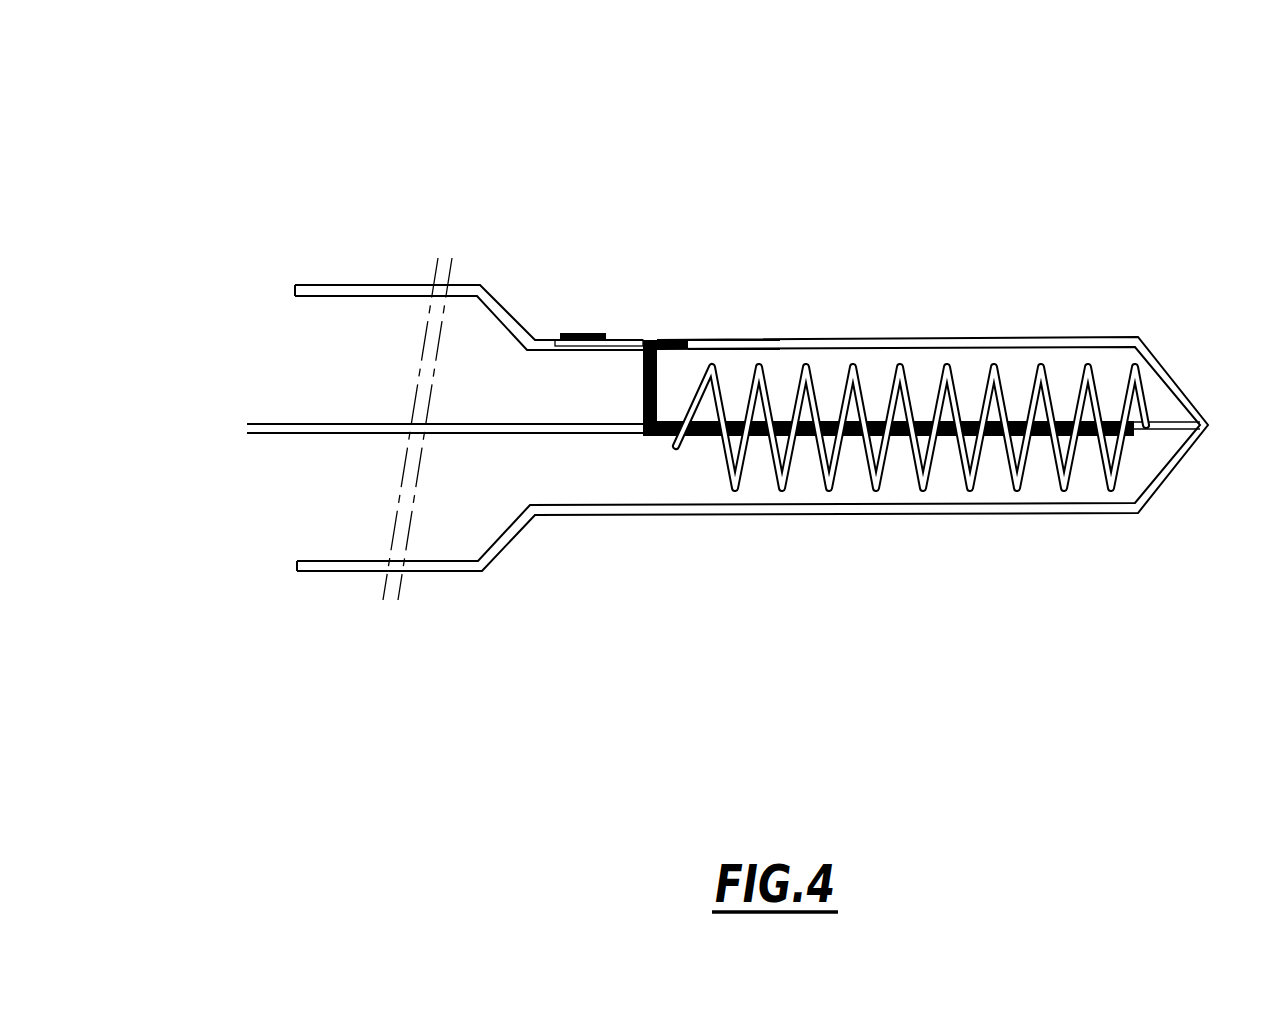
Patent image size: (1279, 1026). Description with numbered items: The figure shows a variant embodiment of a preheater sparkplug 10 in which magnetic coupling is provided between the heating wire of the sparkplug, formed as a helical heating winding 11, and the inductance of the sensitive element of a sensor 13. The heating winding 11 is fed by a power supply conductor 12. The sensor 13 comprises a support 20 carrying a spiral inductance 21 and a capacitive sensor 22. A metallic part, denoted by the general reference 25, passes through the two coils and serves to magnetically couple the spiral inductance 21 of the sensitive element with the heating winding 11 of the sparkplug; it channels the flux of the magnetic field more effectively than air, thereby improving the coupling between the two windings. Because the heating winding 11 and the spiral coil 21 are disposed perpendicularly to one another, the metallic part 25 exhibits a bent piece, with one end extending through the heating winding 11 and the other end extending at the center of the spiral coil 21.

The preheater sparkplug 10 is at (1068, 155).
The heating winding 11 is at (1000, 380).
The power supply conductor 12 is at (537, 435).
The sensor 13 is at (655, 328).
The support 20 is at (552, 337).
The spiral inductance 21 is at (693, 332).
The capacitive sensor 22 is at (582, 330).
The metallic part 25 is at (675, 440).